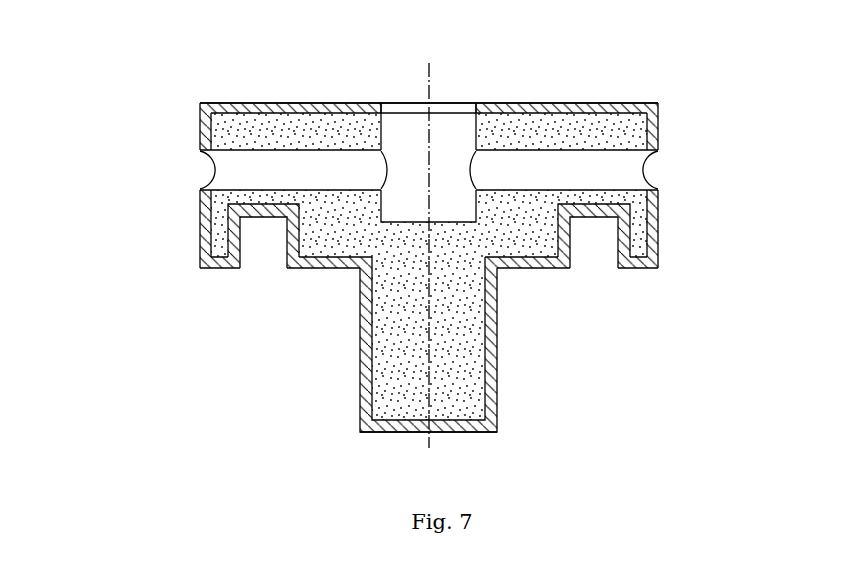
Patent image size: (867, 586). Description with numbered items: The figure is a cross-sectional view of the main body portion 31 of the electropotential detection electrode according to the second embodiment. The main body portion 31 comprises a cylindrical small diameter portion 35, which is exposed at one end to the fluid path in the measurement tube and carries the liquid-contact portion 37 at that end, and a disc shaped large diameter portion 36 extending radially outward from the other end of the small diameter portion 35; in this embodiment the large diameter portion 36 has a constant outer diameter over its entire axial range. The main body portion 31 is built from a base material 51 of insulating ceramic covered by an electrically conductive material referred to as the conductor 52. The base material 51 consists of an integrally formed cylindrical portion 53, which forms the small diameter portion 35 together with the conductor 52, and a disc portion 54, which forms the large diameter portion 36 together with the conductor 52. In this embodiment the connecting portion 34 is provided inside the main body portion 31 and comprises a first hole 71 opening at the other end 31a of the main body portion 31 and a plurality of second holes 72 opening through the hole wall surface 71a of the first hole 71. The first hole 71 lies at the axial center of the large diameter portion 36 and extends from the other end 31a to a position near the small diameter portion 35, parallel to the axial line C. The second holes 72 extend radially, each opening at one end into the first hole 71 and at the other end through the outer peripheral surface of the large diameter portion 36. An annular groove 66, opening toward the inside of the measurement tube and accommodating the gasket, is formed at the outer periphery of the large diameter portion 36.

The main body portion 31 is at (346, 402).
The other end of main body portion 31a is at (537, 102).
The connecting portion 34 is at (471, 103).
The small diameter portion 35 is at (361, 325).
The large diameter portion 36 is at (200, 223).
The liquid-contact portion 37 is at (405, 435).
The base material 51 is at (484, 400).
The conductor 52 is at (494, 367).
The cylindrical portion 53 is at (458, 316).
The disc portion 54 is at (623, 133).
The annular groove 66 is at (257, 220).
The first hole 71 is at (409, 133).
The hole wall surface 71a is at (376, 122).
The second holes 72 is at (273, 171).
The axial line C is at (432, 83).